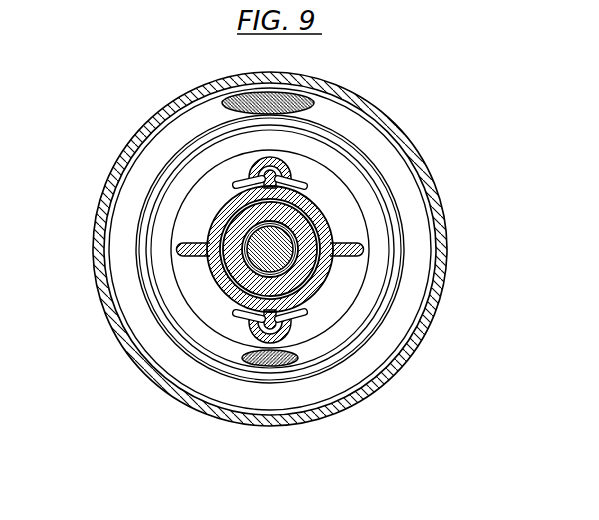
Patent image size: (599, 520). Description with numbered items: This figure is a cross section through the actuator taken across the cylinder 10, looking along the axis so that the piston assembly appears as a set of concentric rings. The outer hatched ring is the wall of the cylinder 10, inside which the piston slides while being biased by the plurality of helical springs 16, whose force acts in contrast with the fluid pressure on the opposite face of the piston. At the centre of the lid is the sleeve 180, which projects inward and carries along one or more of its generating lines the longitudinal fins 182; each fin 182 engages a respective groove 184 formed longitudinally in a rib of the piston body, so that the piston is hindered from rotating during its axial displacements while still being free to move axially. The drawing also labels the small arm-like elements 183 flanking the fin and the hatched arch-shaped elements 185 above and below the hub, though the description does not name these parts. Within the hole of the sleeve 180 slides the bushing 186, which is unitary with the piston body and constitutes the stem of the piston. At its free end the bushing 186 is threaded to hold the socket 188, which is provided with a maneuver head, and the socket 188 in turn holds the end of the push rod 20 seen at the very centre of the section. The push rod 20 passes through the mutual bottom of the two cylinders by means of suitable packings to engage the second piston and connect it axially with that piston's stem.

The cylinder 10 is at (95, 207).
The helical springs 16 is at (382, 228).
The push rod 20 is at (313, 277).
The sleeve 180 is at (317, 212).
The longitudinal fins 182 is at (283, 320).
The spring arms 183 is at (292, 176).
The groove 184 is at (280, 170).
The clip arch 185 is at (250, 160).
The bushing 186 is at (237, 213).
The socket 188 is at (233, 273).